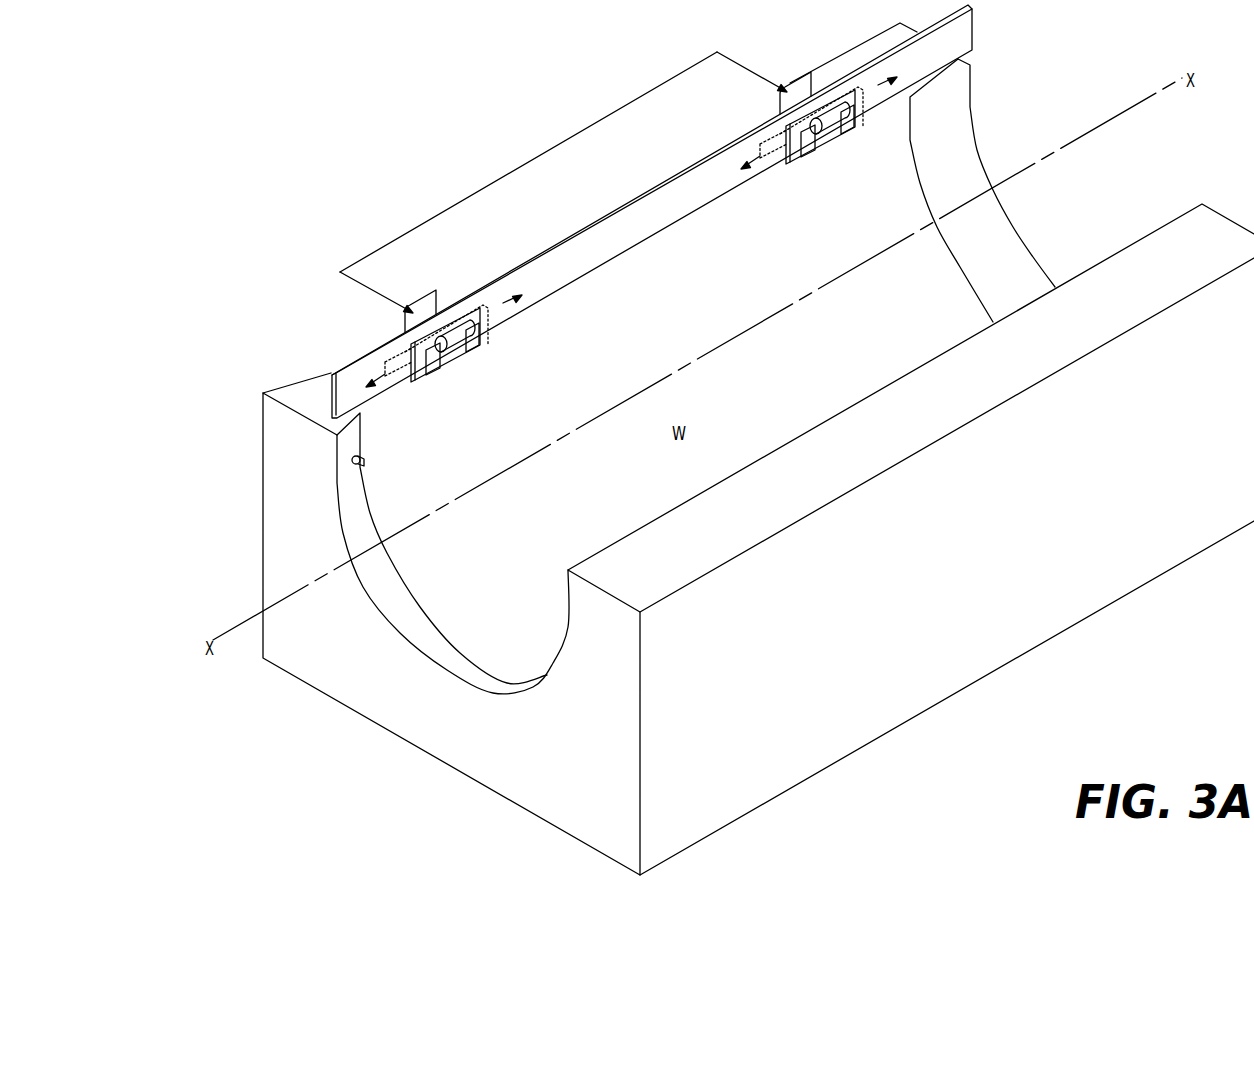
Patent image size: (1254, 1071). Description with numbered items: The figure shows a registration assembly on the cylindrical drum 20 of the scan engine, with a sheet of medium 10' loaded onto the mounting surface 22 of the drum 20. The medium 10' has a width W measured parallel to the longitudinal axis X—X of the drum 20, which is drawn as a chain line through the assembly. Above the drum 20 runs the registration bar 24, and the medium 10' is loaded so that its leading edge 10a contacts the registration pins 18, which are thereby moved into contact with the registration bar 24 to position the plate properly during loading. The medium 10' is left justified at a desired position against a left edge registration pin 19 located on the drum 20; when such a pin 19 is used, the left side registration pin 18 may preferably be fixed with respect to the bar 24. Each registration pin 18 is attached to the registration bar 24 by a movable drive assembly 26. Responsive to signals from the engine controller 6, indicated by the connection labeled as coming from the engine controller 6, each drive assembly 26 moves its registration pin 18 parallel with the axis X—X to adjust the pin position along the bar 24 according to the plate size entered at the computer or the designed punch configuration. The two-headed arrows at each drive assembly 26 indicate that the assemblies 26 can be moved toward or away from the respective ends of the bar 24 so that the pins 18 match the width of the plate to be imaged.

The cylindrical drum 20 is at (1002, 566).
The leading edge 10a is at (367, 407).
The medium 10' is at (945, 190).
The registration pin 19 is at (364, 463).
The mounting surface 22 is at (1007, 280).
The registration bar 24 is at (962, 25).
The engine controller 6 is at (523, 163).
The registration pins 18 is at (430, 377).
The movable drive assembly 26 is at (457, 357).